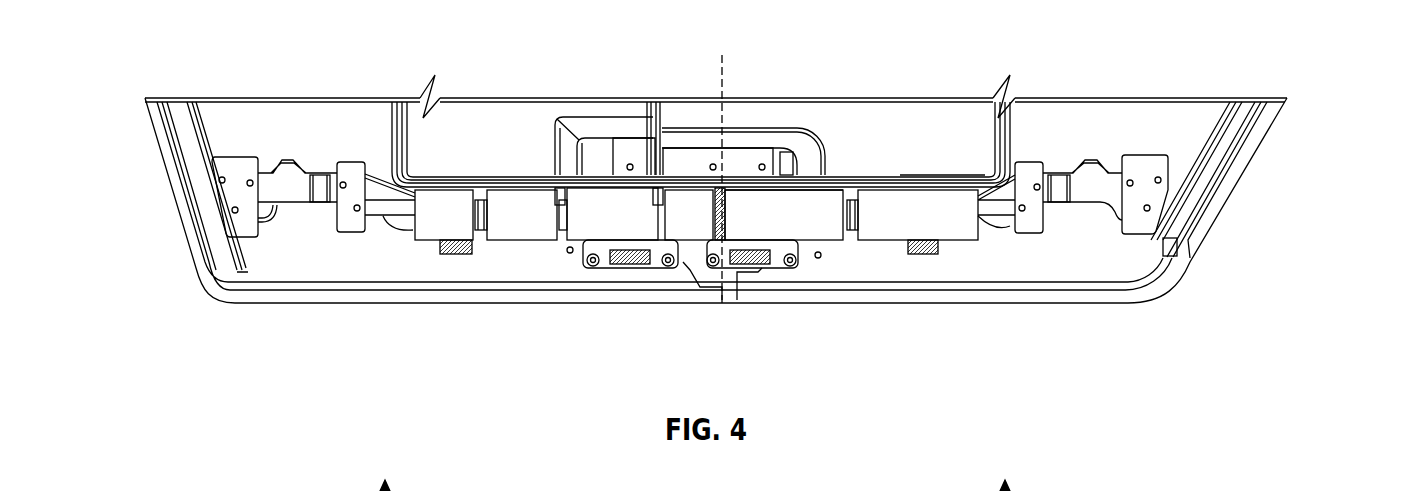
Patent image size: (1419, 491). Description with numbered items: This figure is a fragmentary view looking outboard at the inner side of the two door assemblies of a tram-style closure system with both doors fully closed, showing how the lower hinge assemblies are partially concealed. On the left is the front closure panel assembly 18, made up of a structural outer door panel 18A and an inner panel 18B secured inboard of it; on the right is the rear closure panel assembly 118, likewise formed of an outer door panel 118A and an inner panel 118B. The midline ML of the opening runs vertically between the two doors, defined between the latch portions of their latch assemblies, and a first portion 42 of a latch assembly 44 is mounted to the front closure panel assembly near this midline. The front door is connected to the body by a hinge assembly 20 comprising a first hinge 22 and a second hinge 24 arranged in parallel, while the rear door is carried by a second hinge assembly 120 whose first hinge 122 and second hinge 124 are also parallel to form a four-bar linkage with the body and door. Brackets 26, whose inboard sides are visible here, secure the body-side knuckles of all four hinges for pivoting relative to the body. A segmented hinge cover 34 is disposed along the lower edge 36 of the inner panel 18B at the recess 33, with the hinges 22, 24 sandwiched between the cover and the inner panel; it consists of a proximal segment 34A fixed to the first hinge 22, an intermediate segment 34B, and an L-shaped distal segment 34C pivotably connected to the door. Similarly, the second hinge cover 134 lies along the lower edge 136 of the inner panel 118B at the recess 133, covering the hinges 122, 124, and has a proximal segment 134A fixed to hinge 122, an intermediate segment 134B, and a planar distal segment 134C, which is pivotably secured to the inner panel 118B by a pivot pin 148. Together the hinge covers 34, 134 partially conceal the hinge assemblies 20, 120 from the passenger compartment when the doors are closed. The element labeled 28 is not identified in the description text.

The closure panel assembly 18 is at (226, 200).
The structural door panel 18A is at (153, 128).
The inner panel 18B is at (415, 143).
The hinge assembly 20 is at (294, 252).
The first hinge 22 is at (408, 208).
The second hinge 24 is at (287, 200).
The bracket 26 is at (239, 192).
The center rail housing 28 is at (537, 177).
The recess 33 is at (438, 188).
The segmented hinge cover 34 is at (541, 293).
The proximal segment 34A is at (437, 228).
The intermediate segment 34B is at (535, 242).
The distal segment 34C is at (577, 215).
The lower edge 36 is at (517, 190).
The first portion of latch assembly 42 is at (623, 272).
The latch assembly 44 is at (763, 280).
The closure panel assembly 118 is at (1124, 176).
The structural door panel 118A is at (1262, 140).
The inner panel 118B is at (877, 115).
The hinge assembly 120 is at (1093, 257).
The first hinge 122 is at (997, 213).
The second hinge 124 is at (1095, 190).
The recess 133 is at (943, 172).
The second segmented hinge cover 134 is at (830, 263).
The proximal segment 134A is at (950, 222).
The intermediate segment 134B is at (805, 173).
The distal segment 134C is at (682, 220).
The lower edge 136 is at (918, 192).
The pivot pin 148 is at (667, 170).
The midline ML is at (737, 73).